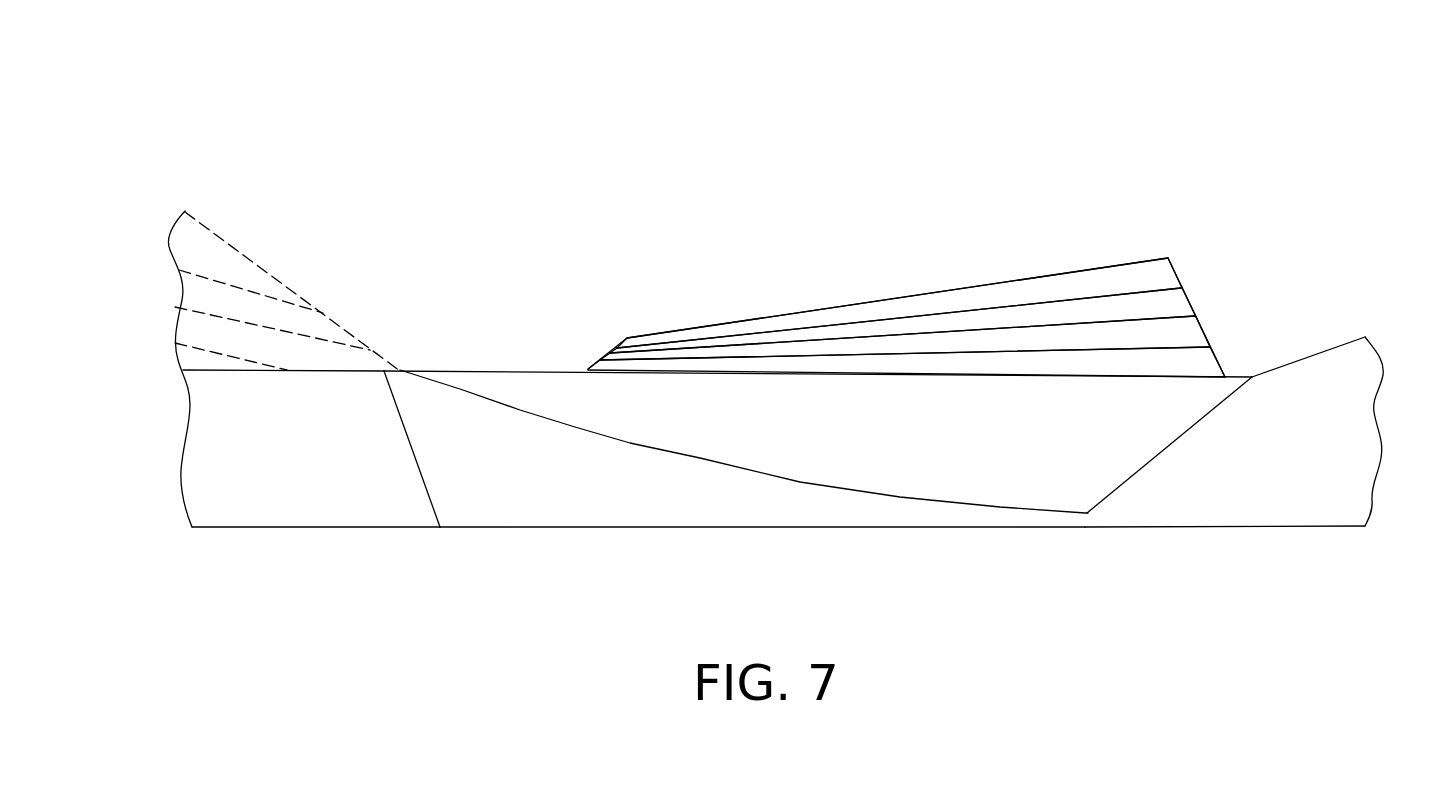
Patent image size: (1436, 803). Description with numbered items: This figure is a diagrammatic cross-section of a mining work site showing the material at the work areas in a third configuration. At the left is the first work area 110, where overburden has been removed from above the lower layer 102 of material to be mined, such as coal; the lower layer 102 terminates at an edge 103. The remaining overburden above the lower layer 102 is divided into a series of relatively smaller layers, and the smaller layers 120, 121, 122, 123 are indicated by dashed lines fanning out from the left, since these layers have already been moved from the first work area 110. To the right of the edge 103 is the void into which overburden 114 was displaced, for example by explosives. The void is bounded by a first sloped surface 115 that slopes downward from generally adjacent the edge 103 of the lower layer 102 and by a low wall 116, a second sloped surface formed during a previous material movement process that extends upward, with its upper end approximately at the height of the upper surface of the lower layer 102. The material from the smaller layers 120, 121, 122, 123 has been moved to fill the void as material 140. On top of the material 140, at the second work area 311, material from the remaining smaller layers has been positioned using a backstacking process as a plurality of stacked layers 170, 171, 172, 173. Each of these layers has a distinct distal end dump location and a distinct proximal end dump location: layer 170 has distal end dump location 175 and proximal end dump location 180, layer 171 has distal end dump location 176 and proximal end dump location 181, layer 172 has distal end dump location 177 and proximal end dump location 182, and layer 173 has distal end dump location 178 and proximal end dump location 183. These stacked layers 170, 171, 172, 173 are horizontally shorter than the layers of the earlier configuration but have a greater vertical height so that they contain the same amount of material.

The first work area 110 is at (280, 152).
The lower layer 102 is at (310, 488).
The edge of the lower layer 103 is at (417, 462).
The overburden moved into the void 114 is at (575, 480).
The first sloped surface 115 is at (670, 450).
The material 140 is at (995, 482).
The low wall 116 is at (1190, 430).
The smaller layer 120 is at (233, 267).
The smaller layer 121 is at (277, 315).
The smaller layer 122 is at (327, 355).
The smaller layer 123 is at (198, 360).
The second work area 311 is at (808, 150).
The layer 170 is at (1068, 367).
The layer 171 is at (1002, 340).
The layer 172 is at (933, 323).
The layer 173 is at (963, 298).
The distal end dump location 175 is at (1202, 367).
The distal end dump location 176 is at (1180, 338).
The distal end dump location 177 is at (1178, 307).
The distal end dump location 178 is at (1160, 277).
The proximal end dump location 180 is at (584, 368).
The proximal end dump location 181 is at (608, 357).
The proximal end dump location 182 is at (621, 345).
The proximal end dump location 183 is at (643, 336).